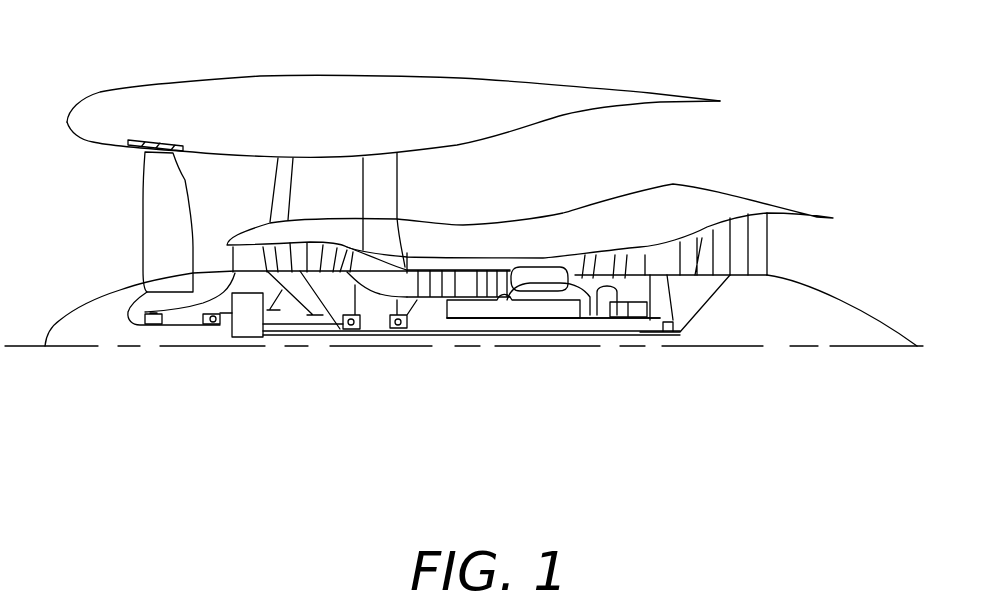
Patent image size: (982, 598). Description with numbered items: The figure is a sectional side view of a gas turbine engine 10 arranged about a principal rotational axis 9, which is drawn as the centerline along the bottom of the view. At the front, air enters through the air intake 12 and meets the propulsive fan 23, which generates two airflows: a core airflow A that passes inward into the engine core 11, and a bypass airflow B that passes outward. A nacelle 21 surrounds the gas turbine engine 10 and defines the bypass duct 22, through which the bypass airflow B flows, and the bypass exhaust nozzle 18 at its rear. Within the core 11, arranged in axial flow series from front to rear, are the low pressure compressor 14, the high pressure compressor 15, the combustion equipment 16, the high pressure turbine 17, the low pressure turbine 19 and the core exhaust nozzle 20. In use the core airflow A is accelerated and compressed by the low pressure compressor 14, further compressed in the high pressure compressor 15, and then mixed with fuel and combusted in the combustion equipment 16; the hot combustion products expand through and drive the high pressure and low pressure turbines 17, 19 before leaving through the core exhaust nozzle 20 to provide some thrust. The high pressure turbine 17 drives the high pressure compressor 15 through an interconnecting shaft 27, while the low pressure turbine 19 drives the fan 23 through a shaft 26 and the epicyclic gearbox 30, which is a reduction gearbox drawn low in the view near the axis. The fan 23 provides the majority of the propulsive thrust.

The principal rotational axis 9 is at (720, 348).
The gas turbine engine 10 is at (434, 84).
The core 11 is at (508, 245).
The air intake 12 is at (97, 169).
The low pressure compressor 14 is at (317, 250).
The high pressure compressor 15 is at (463, 283).
The combustion equipment 16 is at (538, 283).
The high pressure turbine 17 is at (603, 267).
The bypass exhaust nozzle 18 is at (713, 140).
The low pressure turbine 19 is at (740, 235).
The core exhaust nozzle 20 is at (800, 247).
The nacelle 21 is at (375, 88).
The bypass duct 22 is at (667, 154).
The propulsive fan 23 is at (147, 225).
The shaft 26 is at (458, 333).
The interconnecting shaft 27 is at (497, 320).
The epicyclic gearbox 30 is at (245, 338).
The core airflow A is at (225, 259).
The bypass airflow B is at (225, 192).